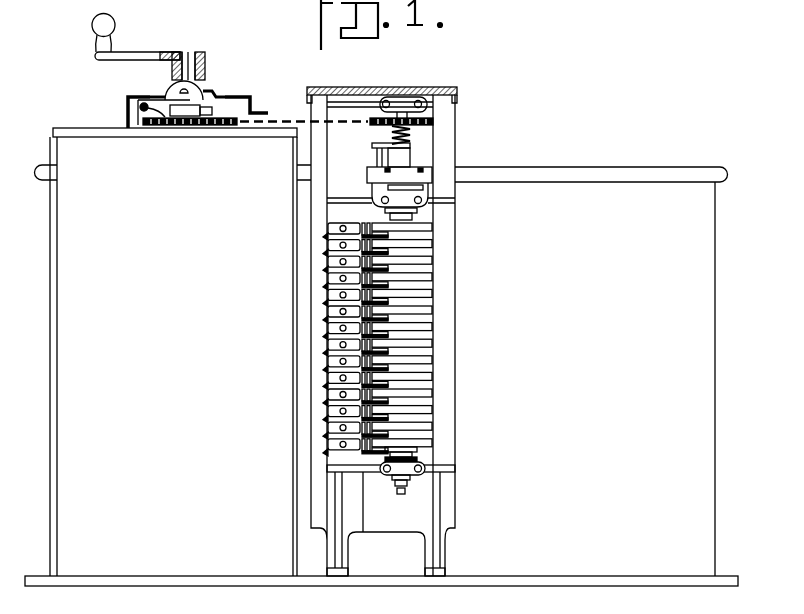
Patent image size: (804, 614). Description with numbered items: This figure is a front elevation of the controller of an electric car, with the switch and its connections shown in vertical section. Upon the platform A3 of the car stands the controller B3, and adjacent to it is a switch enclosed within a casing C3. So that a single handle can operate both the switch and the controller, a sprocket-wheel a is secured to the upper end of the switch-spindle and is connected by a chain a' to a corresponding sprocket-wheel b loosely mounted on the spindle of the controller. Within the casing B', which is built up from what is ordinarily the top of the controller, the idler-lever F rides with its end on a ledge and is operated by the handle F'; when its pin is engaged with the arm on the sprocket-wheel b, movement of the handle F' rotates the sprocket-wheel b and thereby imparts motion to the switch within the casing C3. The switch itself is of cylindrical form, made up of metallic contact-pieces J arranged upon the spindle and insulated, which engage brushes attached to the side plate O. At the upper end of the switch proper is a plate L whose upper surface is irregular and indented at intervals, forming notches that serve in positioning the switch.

The handle F' is at (148, 47).
The idler-lever F is at (177, 82).
The casing B' is at (175, 111).
The sprocket-wheel b is at (217, 125).
The chain a' is at (304, 115).
The sprocket-wheel a is at (424, 119).
The plate L is at (399, 173).
The contact-pieces J is at (428, 311).
The casing C3 is at (455, 398).
The controller B3 is at (165, 290).
The platform A3 is at (640, 567).
The side plate O is at (384, 526).